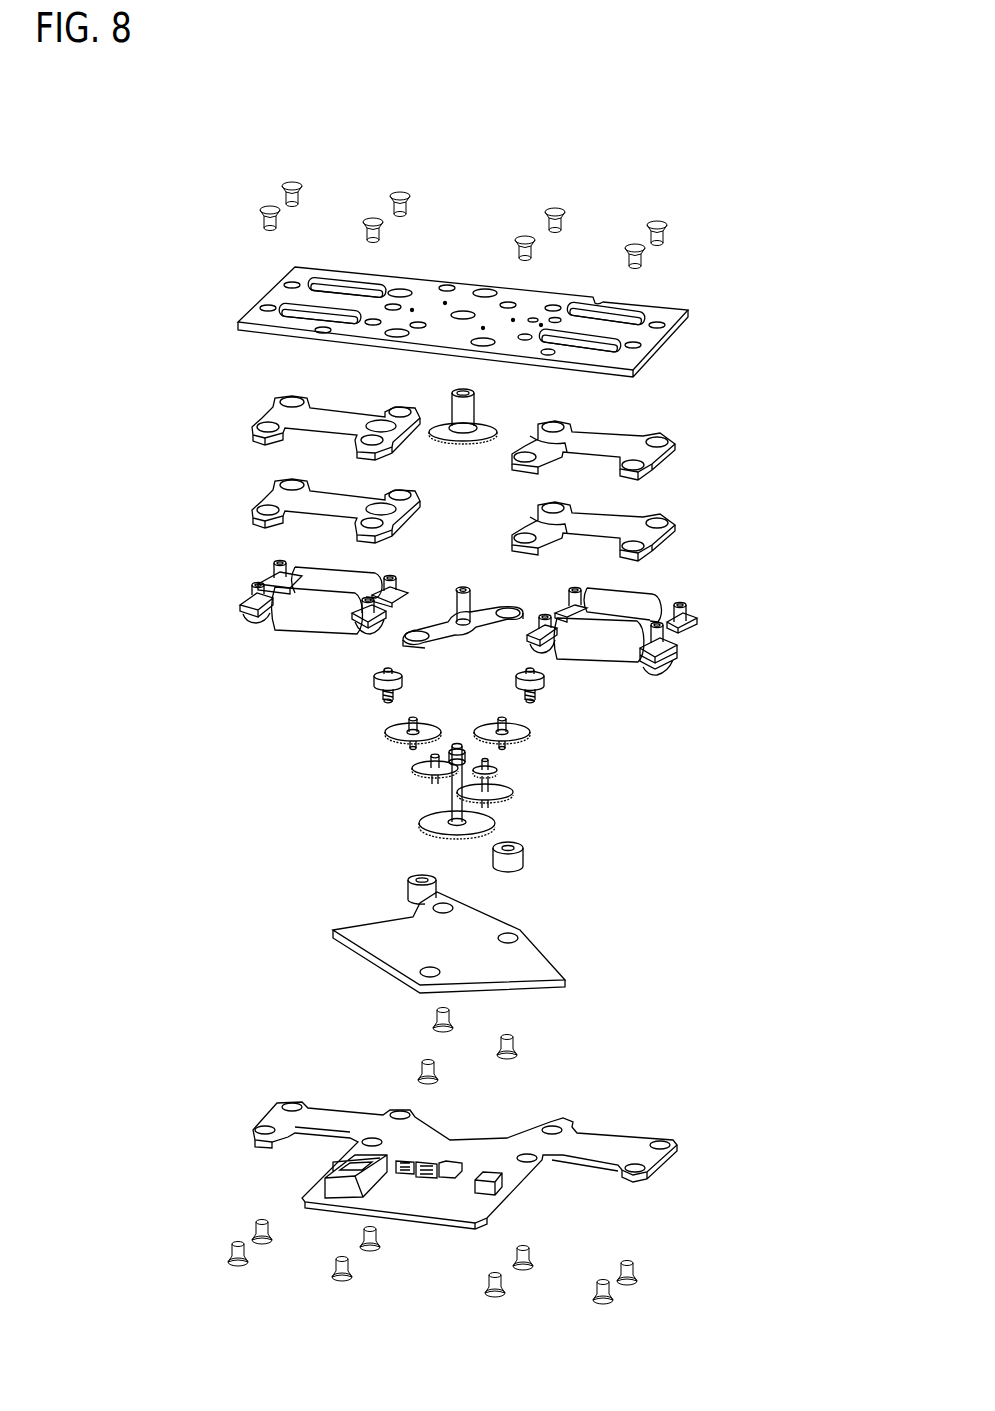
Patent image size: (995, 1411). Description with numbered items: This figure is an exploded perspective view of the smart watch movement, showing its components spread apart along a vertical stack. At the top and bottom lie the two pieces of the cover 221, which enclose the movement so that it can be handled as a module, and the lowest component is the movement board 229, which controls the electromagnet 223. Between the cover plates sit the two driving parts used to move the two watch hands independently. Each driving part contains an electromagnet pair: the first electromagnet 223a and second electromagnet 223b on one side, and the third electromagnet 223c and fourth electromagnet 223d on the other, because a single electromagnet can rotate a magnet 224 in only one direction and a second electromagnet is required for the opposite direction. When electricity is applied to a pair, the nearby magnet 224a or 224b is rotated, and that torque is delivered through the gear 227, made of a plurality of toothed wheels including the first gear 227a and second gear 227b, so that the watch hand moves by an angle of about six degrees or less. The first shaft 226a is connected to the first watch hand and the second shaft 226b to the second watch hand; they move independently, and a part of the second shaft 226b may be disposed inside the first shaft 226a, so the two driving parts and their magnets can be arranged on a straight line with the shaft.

The cover 221 is at (650, 307).
The electromagnet 223 is at (447, 611).
The first electromagnet 223a is at (313, 575).
The second electromagnet 223b is at (298, 607).
The third electromagnet 223c is at (643, 607).
The fourth electromagnet 223d is at (598, 630).
The magnet 224 is at (529, 701).
The first magnet 224a is at (403, 678).
The second magnet 224b is at (545, 681).
The first shaft 226a is at (475, 413).
The second shaft 226b is at (452, 800).
The gear 227 is at (388, 724).
The first gear 227a is at (386, 730).
The second gear 227b is at (483, 728).
The movement board 229 is at (570, 1128).